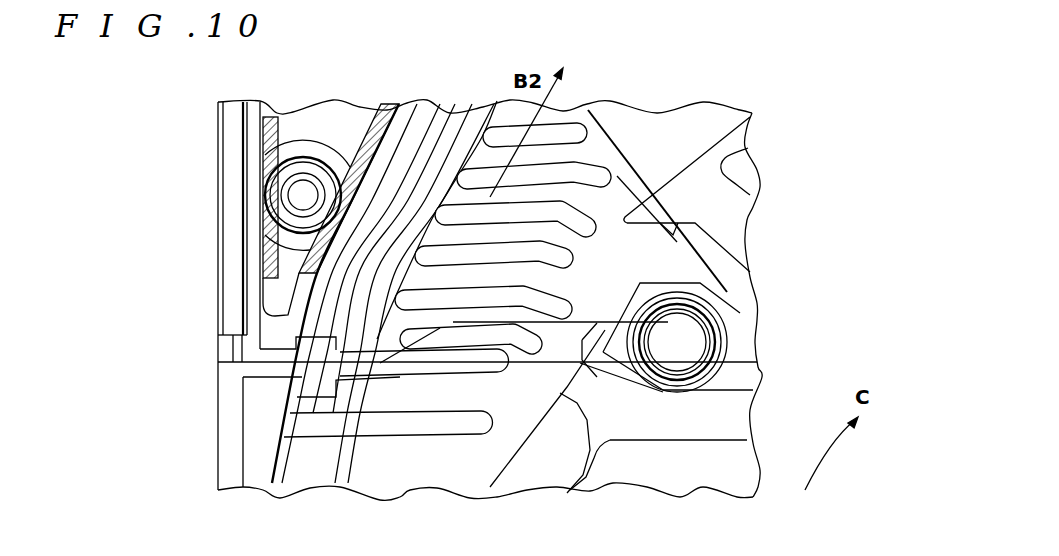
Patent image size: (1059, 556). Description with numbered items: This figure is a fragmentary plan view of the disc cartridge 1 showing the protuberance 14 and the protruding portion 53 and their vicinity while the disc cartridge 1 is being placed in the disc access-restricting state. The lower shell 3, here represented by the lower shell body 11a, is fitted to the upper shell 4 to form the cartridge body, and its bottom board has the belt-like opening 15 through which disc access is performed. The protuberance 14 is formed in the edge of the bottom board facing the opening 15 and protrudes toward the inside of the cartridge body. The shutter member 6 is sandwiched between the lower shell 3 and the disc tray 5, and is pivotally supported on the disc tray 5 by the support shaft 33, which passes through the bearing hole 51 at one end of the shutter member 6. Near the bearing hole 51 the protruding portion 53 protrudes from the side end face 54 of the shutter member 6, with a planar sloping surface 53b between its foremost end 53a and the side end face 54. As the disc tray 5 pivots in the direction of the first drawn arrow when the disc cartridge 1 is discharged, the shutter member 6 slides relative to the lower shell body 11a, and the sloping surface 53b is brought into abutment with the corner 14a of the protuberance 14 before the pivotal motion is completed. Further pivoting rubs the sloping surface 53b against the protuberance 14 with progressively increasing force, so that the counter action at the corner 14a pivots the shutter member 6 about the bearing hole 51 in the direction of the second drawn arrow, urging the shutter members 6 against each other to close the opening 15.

The disc cartridge 1 is at (460, 59).
The lower shell 3 is at (669, 201).
The upper shell 4 is at (228, 384).
The disc tray 5 is at (435, 470).
The shutter member 6 is at (742, 207).
The lower shell body 11a is at (688, 122).
The protuberance 14 is at (586, 315).
The corner 14a is at (603, 402).
The opening 15 is at (282, 413).
The support shaft 33 is at (690, 345).
The bearing hole 51 is at (688, 323).
The protruding portion 53 is at (490, 487).
The foremost end 53a is at (563, 398).
The sloping surface 53b is at (572, 378).
The side end face 54 is at (621, 308).